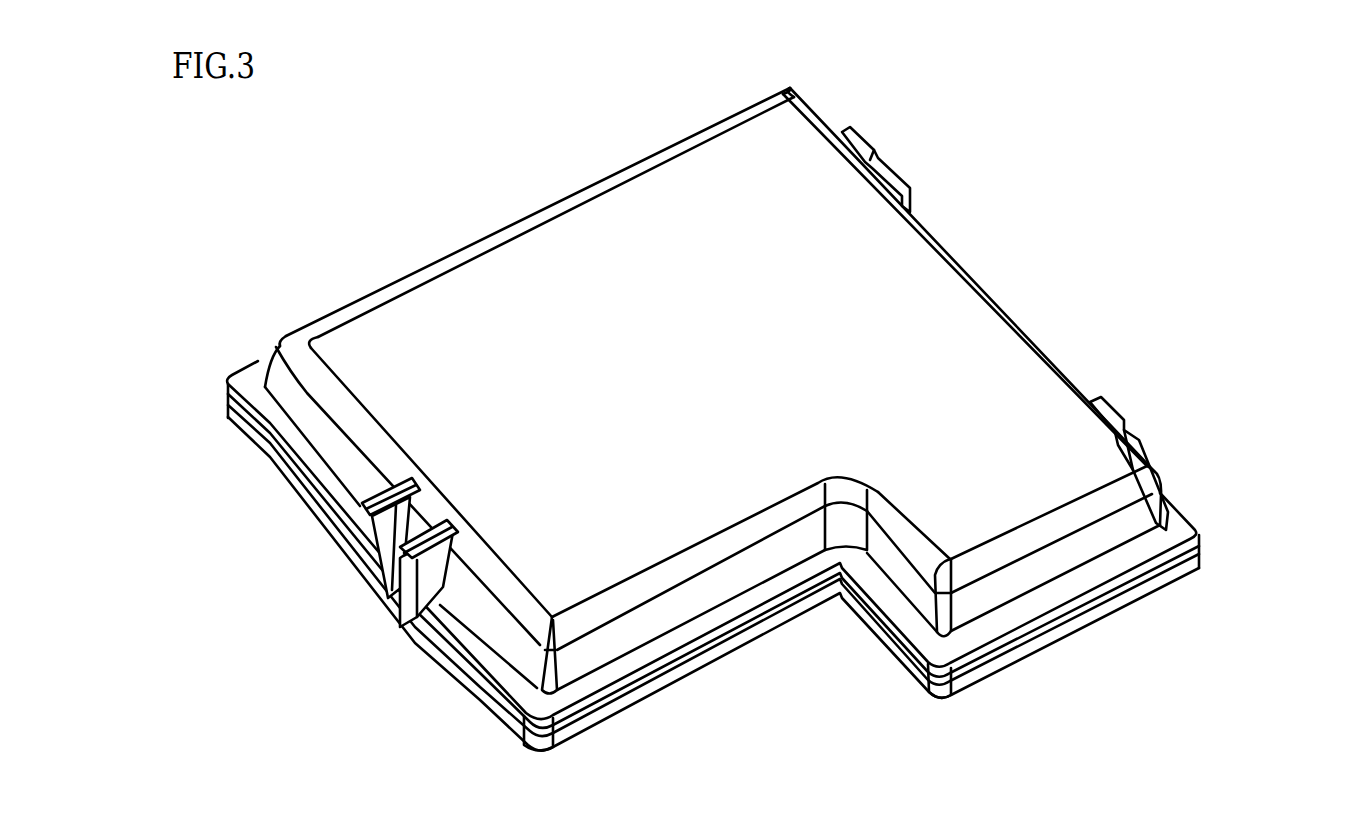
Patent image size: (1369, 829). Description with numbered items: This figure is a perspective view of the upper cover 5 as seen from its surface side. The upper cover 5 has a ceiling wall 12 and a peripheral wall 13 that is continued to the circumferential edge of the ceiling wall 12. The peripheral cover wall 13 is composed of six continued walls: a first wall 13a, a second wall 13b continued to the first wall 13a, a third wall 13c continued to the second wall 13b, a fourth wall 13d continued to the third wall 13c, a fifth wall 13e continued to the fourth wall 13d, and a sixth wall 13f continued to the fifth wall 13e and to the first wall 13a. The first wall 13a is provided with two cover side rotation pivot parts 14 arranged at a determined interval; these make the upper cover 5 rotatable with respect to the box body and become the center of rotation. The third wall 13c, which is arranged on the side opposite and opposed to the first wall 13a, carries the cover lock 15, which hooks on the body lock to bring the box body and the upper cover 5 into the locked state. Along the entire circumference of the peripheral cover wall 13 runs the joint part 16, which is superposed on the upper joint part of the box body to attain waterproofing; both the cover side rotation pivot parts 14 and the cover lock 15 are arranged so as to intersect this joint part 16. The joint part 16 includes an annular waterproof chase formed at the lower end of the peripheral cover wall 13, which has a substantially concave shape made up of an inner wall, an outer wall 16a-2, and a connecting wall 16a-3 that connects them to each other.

The upper cover 5 is at (396, 152).
The ceiling wall 12 is at (677, 187).
The peripheral wall 13 is at (619, 640).
The first wall 13a is at (980, 327).
The second wall 13b is at (533, 260).
The third wall 13c is at (340, 452).
The fourth wall 13d is at (688, 598).
The fifth wall 13e is at (914, 590).
The sixth wall 13f is at (1033, 573).
The cover side rotation pivot part 14 is at (897, 180).
The cover lock 15 is at (348, 585).
The joint part 16 is at (1190, 515).
The outer wall 16a-2 is at (1193, 558).
The connecting wall 16a-3 is at (1108, 565).